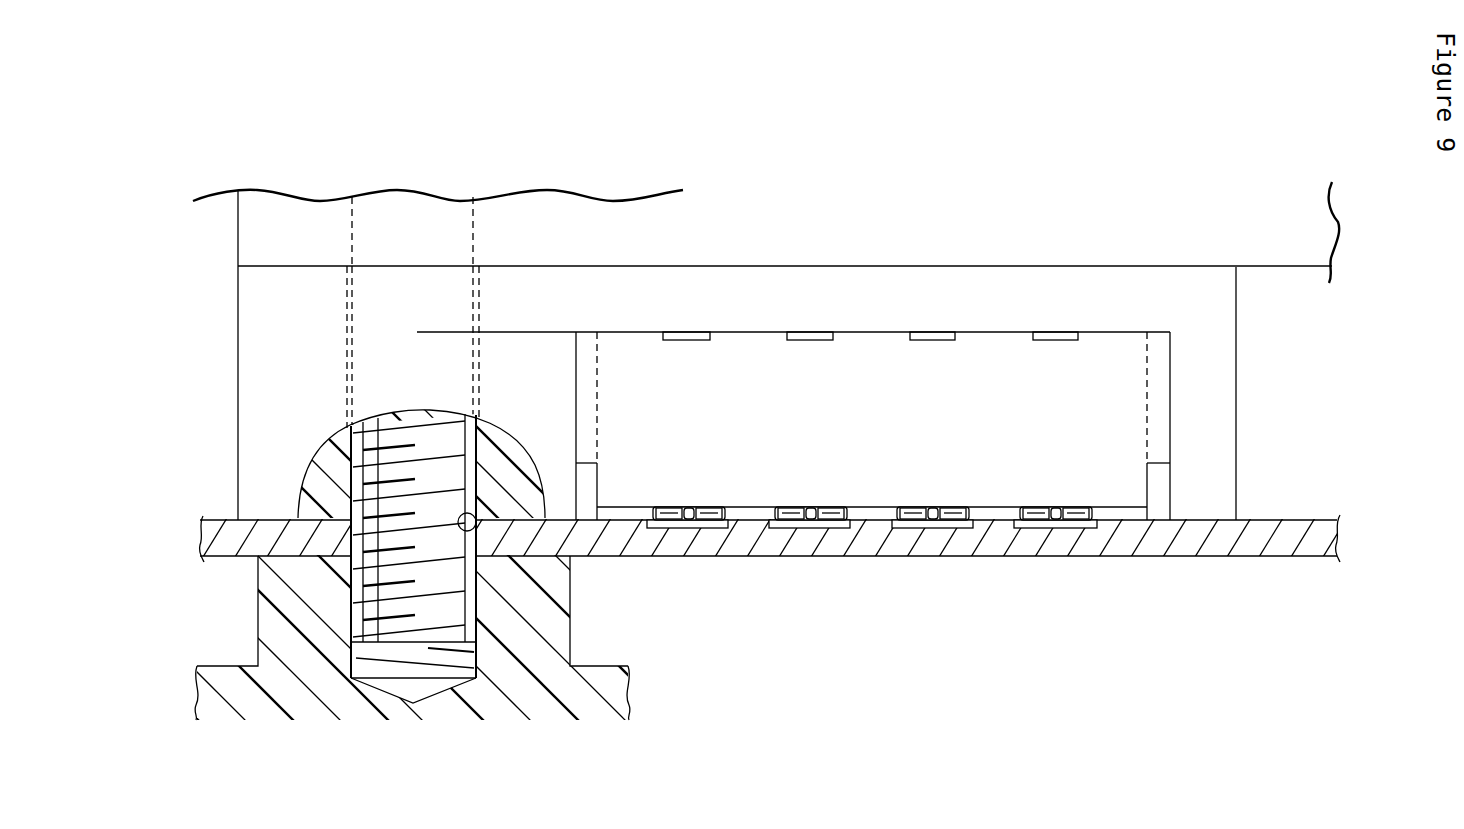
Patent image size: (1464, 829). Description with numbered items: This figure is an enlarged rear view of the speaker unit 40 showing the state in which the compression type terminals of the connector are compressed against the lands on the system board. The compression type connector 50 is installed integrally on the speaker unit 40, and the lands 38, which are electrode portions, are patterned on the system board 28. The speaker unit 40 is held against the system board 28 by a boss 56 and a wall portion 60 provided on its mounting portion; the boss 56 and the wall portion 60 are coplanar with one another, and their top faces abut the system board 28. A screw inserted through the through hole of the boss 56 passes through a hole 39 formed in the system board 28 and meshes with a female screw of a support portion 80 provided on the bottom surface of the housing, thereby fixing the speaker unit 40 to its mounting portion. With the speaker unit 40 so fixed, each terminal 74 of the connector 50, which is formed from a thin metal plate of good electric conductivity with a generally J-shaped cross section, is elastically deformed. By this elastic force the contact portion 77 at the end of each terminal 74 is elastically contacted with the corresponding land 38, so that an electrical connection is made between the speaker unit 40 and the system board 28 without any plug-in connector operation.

The speaker unit 40 is at (197, 228).
The compression type connector 50 is at (1005, 332).
The boss 56 is at (248, 400).
The wall portion 60 is at (1222, 461).
The hole 39 is at (480, 514).
The system board 28 is at (1313, 536).
The support portion 80 is at (268, 627).
The land 38 is at (1007, 513).
The contact portion 77 is at (1050, 510).
The terminal 74 is at (1093, 510).